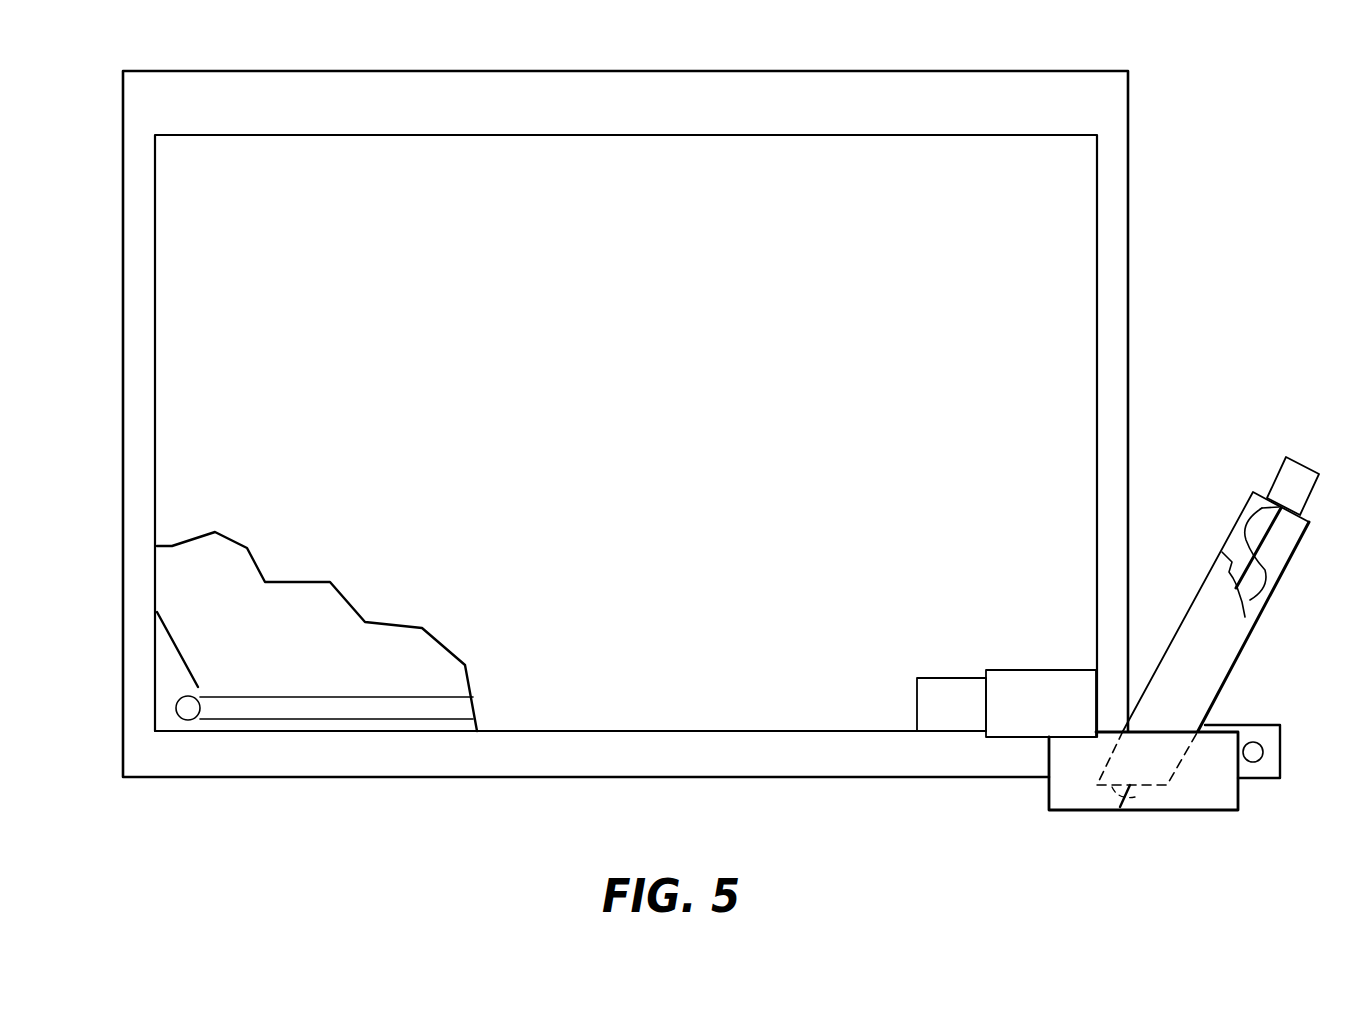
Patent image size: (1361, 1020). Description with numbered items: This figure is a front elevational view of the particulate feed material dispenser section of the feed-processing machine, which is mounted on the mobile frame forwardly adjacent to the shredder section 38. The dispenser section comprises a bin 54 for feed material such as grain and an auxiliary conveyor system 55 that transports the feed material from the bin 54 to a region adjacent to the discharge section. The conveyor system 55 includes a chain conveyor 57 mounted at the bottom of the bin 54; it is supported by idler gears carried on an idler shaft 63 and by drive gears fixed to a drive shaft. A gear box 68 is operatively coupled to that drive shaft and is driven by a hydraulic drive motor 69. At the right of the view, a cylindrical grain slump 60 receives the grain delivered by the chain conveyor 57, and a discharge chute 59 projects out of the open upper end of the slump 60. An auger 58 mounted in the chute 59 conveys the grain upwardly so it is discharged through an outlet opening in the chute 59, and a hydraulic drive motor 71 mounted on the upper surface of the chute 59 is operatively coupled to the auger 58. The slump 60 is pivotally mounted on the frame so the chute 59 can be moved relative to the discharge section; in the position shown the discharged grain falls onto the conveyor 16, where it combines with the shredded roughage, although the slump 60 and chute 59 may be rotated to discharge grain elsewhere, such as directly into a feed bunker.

The conveyor 16 is at (1282, 752).
The shredder section 38 is at (123, 653).
The bin 54 is at (222, 135).
The auxiliary conveyor system 55 is at (366, 668).
The chain conveyor 57 is at (236, 697).
The auger 58 is at (1287, 563).
The discharge chute 59 is at (1237, 660).
The cylindrical grain slump 60 is at (1049, 791).
The idler shaft 63 is at (187, 712).
The gear box 68 is at (1007, 670).
The hydraulic drive motor 69 is at (917, 703).
The hydraulic drive motor 71 is at (1270, 475).